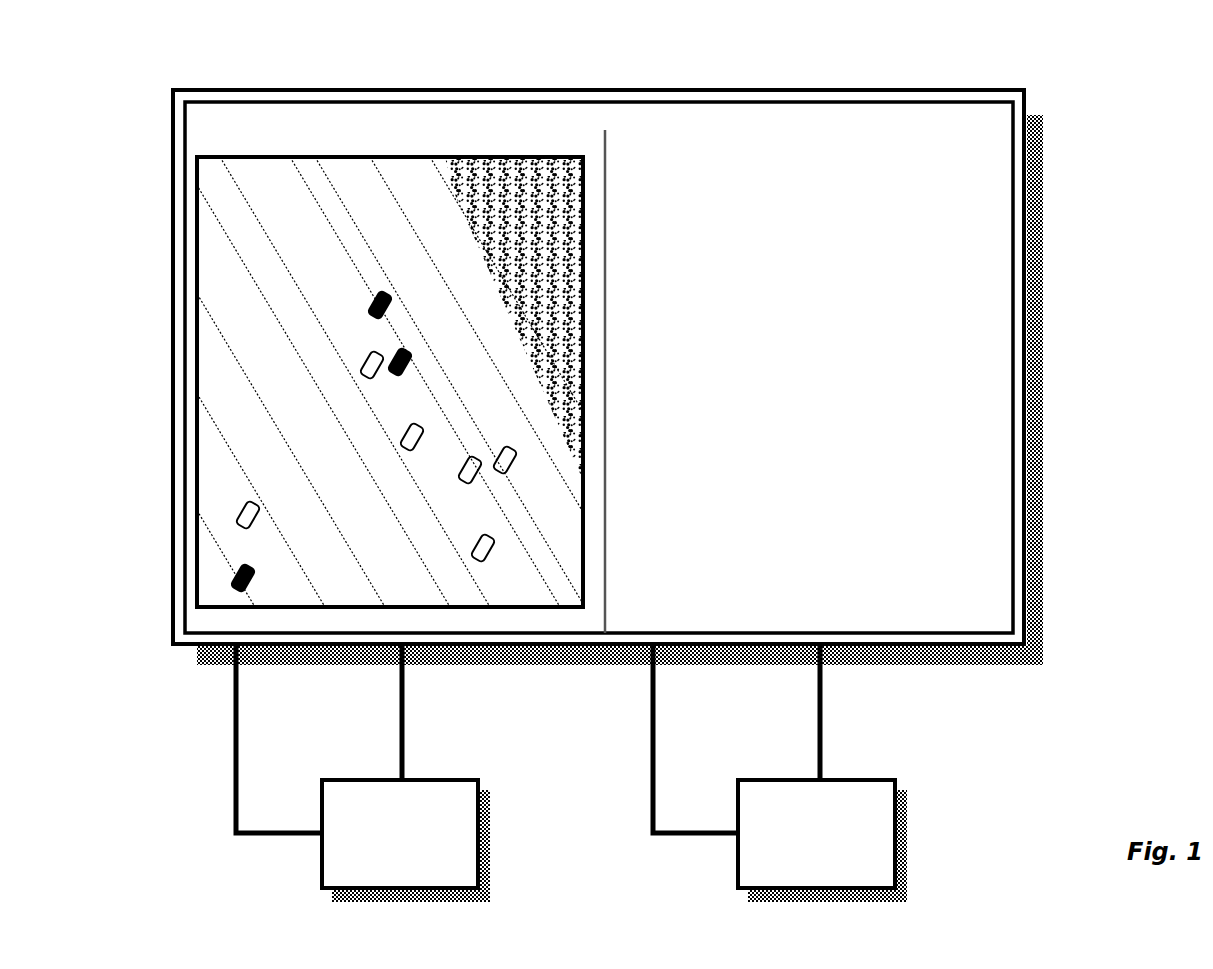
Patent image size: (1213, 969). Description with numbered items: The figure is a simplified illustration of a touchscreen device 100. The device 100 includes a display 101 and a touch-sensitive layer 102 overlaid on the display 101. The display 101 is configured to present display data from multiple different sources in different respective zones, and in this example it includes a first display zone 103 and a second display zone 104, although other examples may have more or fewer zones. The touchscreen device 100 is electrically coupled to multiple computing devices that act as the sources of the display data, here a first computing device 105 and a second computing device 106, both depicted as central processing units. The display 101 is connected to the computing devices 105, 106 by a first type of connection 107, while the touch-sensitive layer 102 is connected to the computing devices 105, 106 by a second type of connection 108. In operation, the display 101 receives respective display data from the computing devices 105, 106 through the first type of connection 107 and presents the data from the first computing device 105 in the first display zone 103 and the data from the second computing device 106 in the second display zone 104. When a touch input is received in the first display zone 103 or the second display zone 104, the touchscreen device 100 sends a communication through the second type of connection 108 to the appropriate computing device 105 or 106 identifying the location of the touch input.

The touchscreen device 100 is at (1078, 422).
The display 101 is at (1024, 90).
The touch-sensitive layer 102 is at (212, 117).
The first display zone 103 is at (578, 133).
The second display zone 104 is at (649, 132).
The first computing device 105 is at (323, 897).
The second computing device 106 is at (745, 897).
The first type of connection 107 is at (395, 685).
The second type of connection 108 is at (247, 845).